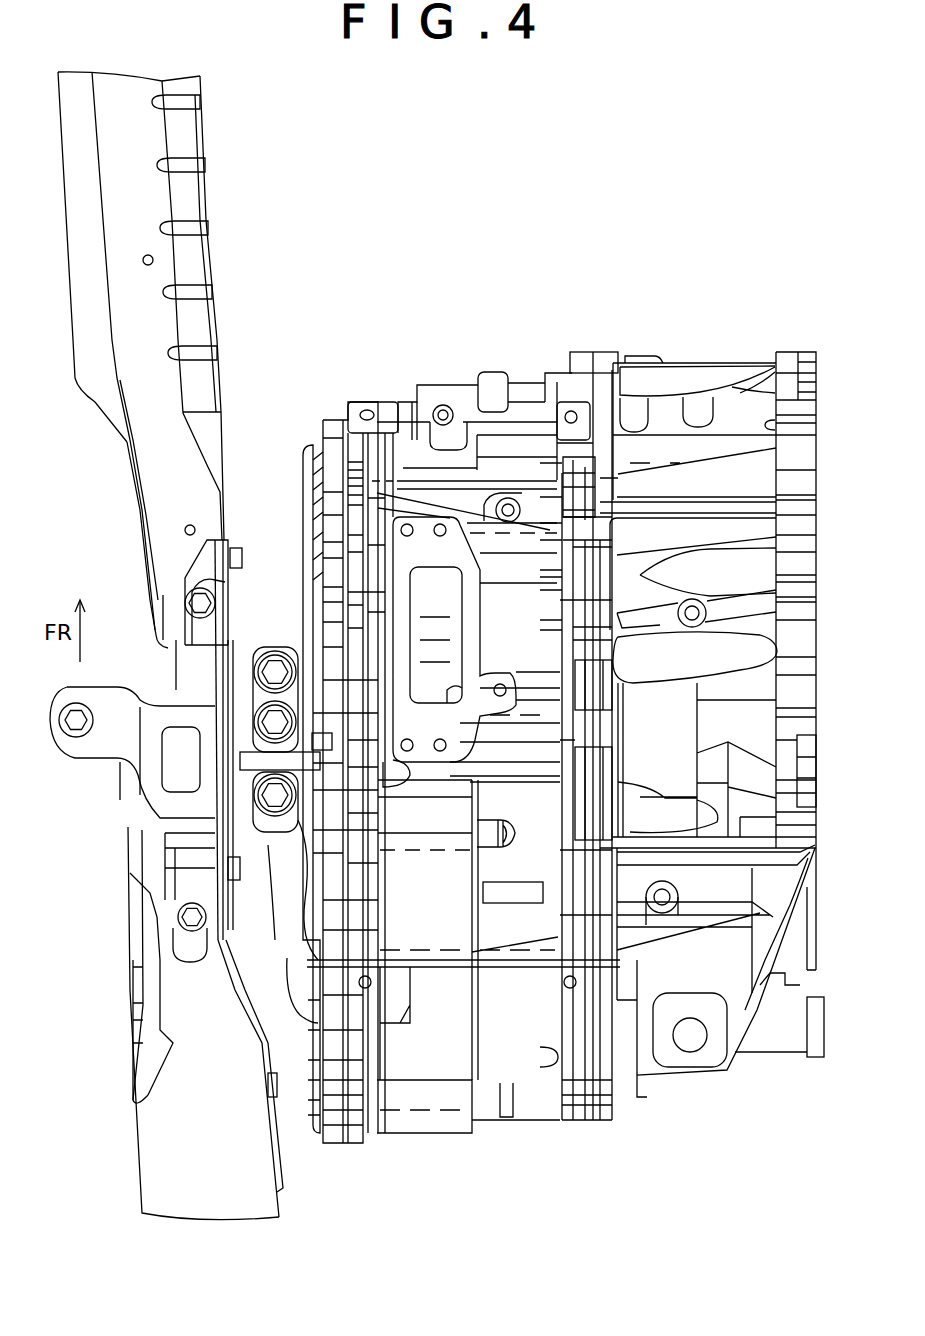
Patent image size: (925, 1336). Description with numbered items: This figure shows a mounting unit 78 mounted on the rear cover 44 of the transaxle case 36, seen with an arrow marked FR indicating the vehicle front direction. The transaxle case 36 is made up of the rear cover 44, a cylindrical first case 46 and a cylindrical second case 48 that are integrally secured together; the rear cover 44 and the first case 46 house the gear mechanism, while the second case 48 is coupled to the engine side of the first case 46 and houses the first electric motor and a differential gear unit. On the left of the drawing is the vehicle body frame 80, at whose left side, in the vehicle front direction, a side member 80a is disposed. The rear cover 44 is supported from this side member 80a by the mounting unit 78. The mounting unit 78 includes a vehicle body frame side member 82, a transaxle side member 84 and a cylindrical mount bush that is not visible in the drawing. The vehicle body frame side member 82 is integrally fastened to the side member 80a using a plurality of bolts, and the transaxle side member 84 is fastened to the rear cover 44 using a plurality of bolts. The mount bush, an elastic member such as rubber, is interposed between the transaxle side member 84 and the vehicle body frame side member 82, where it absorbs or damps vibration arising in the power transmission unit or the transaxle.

The transaxle case 36 is at (731, 336).
The rear cover 44 is at (330, 476).
The first case 46 is at (458, 418).
The second case 48 is at (678, 390).
The mounting unit 78 is at (170, 560).
The vehicle body frame 80 is at (125, 66).
The side member 80a is at (160, 500).
The vehicle body frame side member 82 is at (138, 680).
The transaxle side member 84 is at (254, 824).